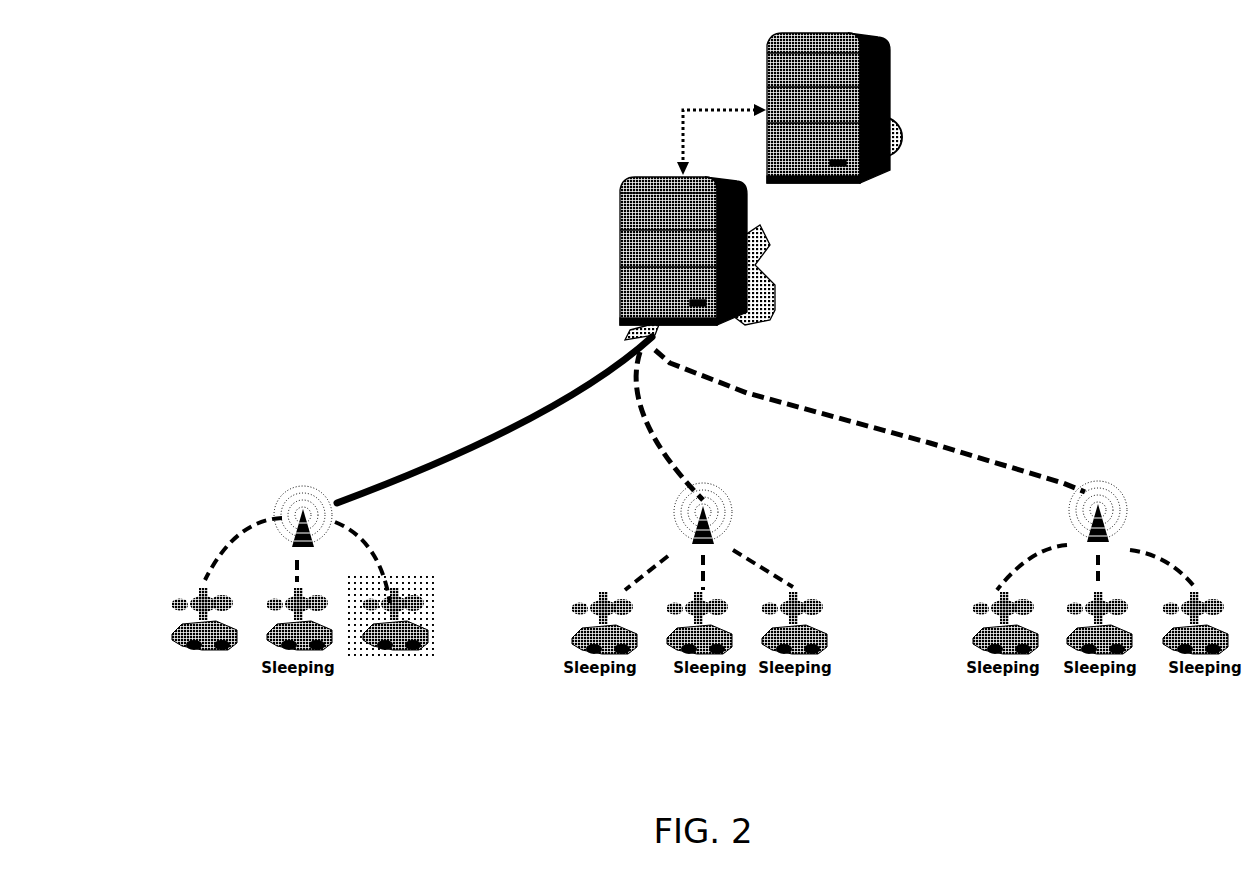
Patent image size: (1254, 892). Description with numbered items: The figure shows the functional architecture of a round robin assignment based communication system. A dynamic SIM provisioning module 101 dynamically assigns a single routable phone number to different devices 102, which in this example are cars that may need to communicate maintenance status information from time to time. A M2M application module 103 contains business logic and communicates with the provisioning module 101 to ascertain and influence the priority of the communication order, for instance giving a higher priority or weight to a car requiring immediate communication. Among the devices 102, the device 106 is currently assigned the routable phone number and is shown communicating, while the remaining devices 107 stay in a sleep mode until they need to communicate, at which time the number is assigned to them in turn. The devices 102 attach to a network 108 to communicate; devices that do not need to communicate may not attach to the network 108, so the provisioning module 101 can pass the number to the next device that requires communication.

The dynamic SIM provisioning module 101 is at (610, 165).
The M2M application module 103 is at (746, 76).
The devices 102 is at (167, 628).
The device assigned the routable phone number 106 is at (447, 685).
The remaining devices 107 is at (173, 678).
The network 108 is at (1105, 475).